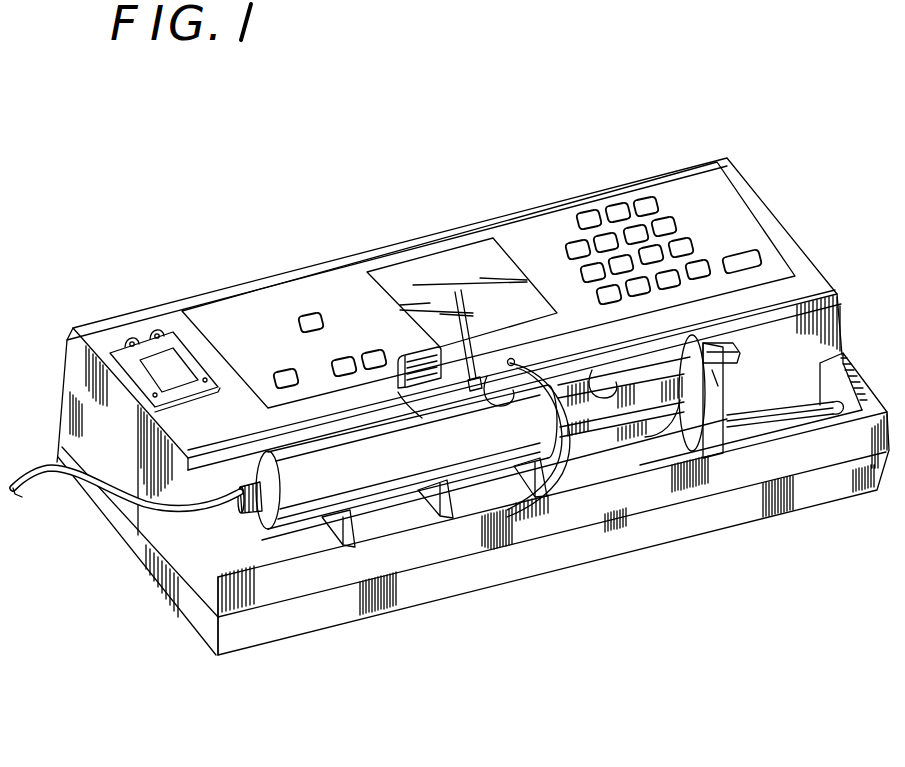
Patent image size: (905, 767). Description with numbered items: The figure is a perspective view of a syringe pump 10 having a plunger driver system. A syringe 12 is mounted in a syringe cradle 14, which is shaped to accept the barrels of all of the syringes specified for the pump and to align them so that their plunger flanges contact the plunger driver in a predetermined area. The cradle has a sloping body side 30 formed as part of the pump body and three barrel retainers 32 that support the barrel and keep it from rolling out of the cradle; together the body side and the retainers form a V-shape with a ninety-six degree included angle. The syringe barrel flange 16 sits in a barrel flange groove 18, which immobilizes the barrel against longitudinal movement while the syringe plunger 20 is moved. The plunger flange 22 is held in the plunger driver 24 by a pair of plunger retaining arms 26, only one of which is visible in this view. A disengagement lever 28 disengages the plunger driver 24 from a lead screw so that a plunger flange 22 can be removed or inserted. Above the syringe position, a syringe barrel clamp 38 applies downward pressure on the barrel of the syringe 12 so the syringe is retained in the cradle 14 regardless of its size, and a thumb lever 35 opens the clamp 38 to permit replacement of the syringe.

The syringe pump 10 is at (306, 232).
The syringe 12 is at (335, 455).
The syringe cradle 14 is at (388, 518).
The syringe barrel flange 16 is at (518, 472).
The barrel flange groove 18 is at (514, 362).
The syringe plunger 20 is at (600, 386).
The plunger flange 22 is at (652, 366).
The plunger driver 24 is at (727, 418).
The plunger retaining arms 26 is at (720, 440).
The disengagement lever 28 is at (722, 356).
The sloping body side 30 is at (213, 470).
The barrel retainers 32 is at (358, 548).
The thumb lever 35 is at (403, 357).
The syringe barrel clamp 38 is at (455, 292).